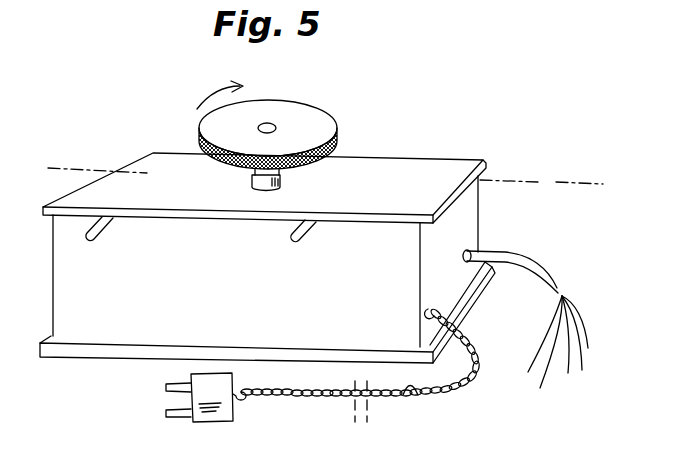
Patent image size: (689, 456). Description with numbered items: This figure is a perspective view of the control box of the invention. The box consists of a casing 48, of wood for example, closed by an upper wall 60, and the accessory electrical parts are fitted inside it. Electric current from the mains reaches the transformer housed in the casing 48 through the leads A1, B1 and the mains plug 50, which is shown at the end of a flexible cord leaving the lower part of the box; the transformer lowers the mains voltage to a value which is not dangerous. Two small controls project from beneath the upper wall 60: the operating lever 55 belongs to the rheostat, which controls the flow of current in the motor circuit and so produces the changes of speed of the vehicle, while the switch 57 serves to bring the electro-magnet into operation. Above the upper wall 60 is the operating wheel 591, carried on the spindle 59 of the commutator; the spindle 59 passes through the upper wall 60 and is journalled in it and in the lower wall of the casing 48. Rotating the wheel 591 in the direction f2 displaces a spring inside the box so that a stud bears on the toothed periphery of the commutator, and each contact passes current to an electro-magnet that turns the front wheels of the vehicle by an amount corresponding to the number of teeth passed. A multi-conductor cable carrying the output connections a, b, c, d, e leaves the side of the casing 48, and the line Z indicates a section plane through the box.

The casing 48 is at (269, 261).
The mains plug 50 is at (198, 393).
The operating lever 55 is at (97, 231).
The switch 57 is at (294, 238).
The spindle 59 is at (273, 123).
The operating wheel 591 is at (320, 128).
The upper wall 60 is at (264, 188).
The lead A1 is at (404, 397).
The lead B1 is at (419, 396).
The wire a is at (588, 350).
The wire b is at (578, 342).
The wire c is at (566, 341).
The wire d is at (548, 349).
The wire e is at (537, 336).
The direction of rotation f2 is at (210, 92).
The section line Z- Z is at (315, 166).